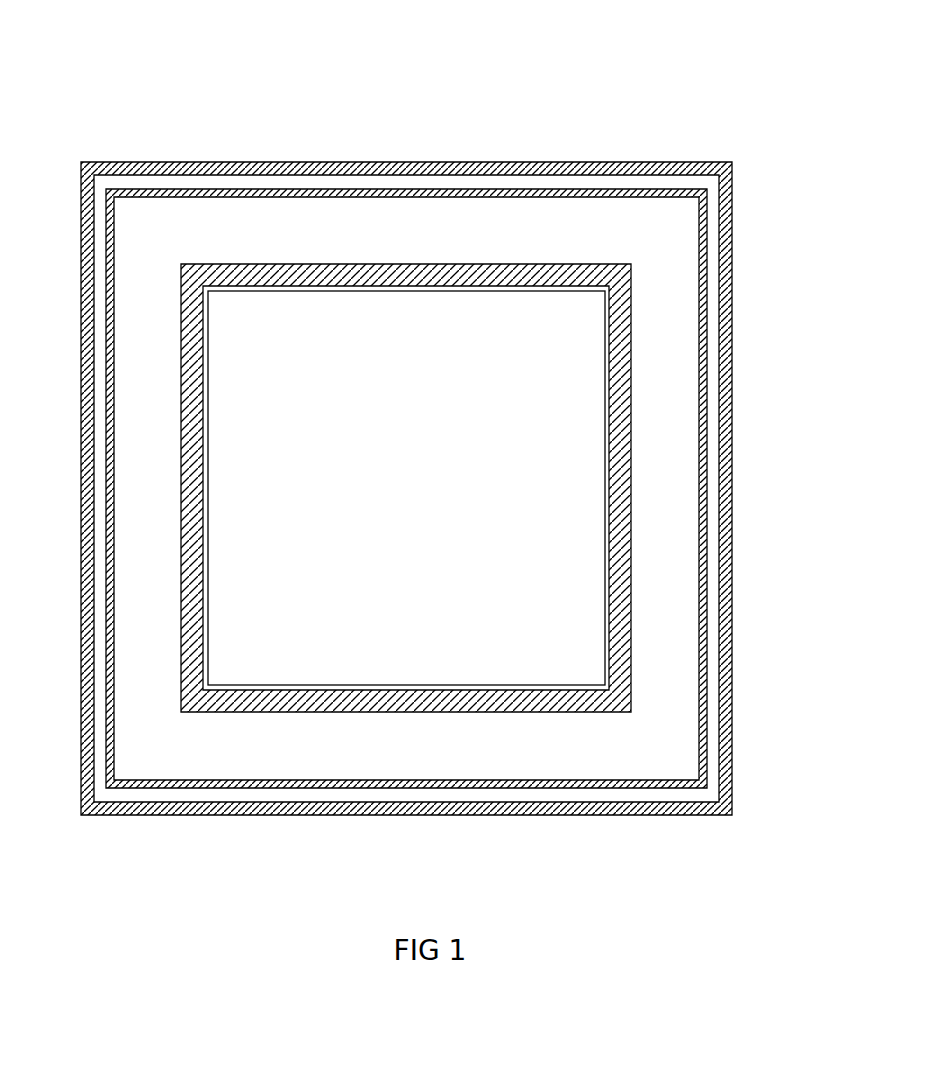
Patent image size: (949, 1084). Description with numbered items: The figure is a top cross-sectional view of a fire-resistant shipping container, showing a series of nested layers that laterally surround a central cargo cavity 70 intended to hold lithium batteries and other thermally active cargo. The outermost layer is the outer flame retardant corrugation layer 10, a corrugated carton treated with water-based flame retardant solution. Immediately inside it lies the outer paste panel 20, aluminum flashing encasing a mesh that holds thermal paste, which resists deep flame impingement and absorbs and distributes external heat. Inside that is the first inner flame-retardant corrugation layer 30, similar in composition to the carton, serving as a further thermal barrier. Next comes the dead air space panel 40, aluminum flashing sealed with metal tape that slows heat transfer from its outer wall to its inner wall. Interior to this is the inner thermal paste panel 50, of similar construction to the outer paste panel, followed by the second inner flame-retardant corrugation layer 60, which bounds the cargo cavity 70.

The outer flame retardant corrugation layer 10 is at (736, 176).
The outer paste panel 20 is at (722, 277).
The first inner flame-retardant corrugation layer 30 is at (705, 372).
The dead air space panel 40 is at (700, 462).
The inner thermal paste panel 50 is at (633, 573).
The second inner flame-retardant corrugation layer 60 is at (616, 662).
The cargo cavity 70 is at (394, 508).